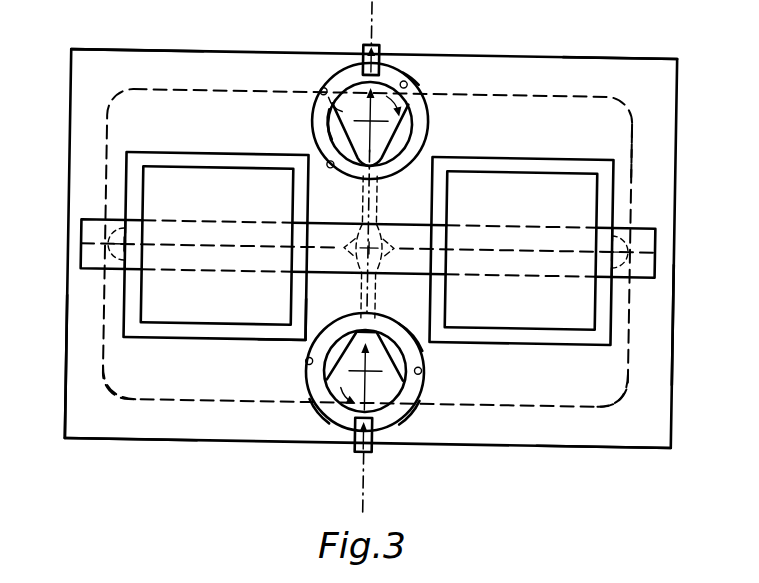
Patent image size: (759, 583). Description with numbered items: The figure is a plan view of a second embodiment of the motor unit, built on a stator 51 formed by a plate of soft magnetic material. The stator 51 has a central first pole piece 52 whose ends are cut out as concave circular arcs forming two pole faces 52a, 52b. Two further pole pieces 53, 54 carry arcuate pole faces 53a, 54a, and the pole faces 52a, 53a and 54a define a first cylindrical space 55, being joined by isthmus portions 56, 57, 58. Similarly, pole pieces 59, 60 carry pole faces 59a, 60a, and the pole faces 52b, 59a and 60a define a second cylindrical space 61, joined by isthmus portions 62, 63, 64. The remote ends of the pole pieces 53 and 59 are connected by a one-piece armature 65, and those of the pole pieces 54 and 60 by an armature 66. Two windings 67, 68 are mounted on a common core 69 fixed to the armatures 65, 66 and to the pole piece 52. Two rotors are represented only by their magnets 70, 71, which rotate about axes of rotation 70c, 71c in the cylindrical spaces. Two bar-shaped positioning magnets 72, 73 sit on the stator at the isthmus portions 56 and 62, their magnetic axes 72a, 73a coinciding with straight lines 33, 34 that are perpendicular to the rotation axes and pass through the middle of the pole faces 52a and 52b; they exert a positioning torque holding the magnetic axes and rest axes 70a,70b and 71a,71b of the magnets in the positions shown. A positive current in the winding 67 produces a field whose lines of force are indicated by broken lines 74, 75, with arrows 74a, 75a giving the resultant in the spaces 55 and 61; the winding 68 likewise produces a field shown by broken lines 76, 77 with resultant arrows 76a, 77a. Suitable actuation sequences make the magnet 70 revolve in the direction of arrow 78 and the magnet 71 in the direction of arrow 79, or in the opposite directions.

The stator 51 is at (630, 453).
The first pole piece 52 is at (439, 289).
The pole face 52a is at (331, 179).
The pole face 52b is at (353, 329).
The pole piece 53 is at (99, 72).
The pole face 53a is at (342, 93).
The pole piece 54 is at (620, 84).
The pole face 54a is at (409, 92).
The cylindrical space 55 is at (417, 92).
The isthmus portion 56 is at (422, 62).
The isthmus portion 57 is at (310, 156).
The isthmus portion 58 is at (418, 157).
The pole piece 59 is at (143, 429).
The pole face 59a is at (310, 368).
The pole piece 60 is at (611, 443).
The pole face 60a is at (424, 371).
The cylindrical space 61 is at (321, 439).
The isthmus portion 62 is at (349, 434).
The isthmus portion 63 is at (305, 343).
The isthmus portion 64 is at (426, 345).
The armature 65 is at (76, 367).
The armature 66 is at (653, 318).
The winding 67 is at (151, 197).
The winding 68 is at (574, 199).
The common core 69 is at (81, 251).
The magnet 70 is at (442, 62).
The magnetic axis and rest axis 70a,70b is at (343, 77).
The axis of rotation 70c is at (335, 108).
The magnet 71 is at (399, 432).
The magnetic axis and rest axis 71a,71b is at (413, 421).
The axis of rotation 71c is at (413, 404).
The positioning magnet 72 is at (357, 58).
The magnetic axis 72a is at (377, 62).
The positioning magnet 73 is at (380, 455).
The magnetic axis 73a is at (356, 442).
The broken line 74 is at (105, 116).
The arrow 74a is at (318, 131).
The broken line 75 is at (117, 397).
The arrow 75a is at (326, 386).
The broken line 76 is at (631, 143).
The arrow 76a is at (404, 172).
The broken line 77 is at (638, 393).
The arrow 77a is at (410, 375).
The arrow 78 is at (414, 94).
The arrow 79 is at (348, 396).
The straight line 33 is at (376, 22).
The straight line 34 is at (380, 507).